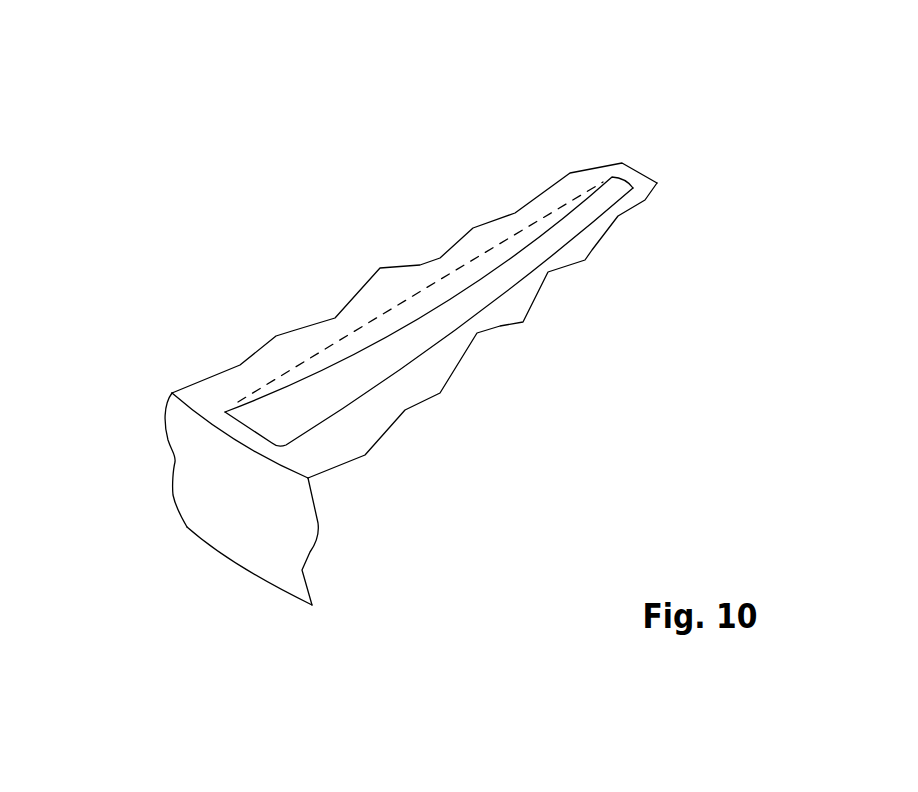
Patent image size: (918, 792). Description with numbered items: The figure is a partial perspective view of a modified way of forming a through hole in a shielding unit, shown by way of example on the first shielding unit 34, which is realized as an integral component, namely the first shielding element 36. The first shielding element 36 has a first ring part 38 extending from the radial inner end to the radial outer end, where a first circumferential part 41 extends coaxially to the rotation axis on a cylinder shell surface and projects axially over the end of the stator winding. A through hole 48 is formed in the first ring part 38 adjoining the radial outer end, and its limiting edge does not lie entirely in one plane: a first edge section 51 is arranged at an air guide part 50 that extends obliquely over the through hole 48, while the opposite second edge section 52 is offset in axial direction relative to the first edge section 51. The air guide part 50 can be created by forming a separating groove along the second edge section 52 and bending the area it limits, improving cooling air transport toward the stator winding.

The first shielding unit 34 is at (416, 259).
The first shielding element 36 is at (582, 137).
The first ring part 38 is at (532, 312).
The first circumferential part 41 is at (213, 527).
The through hole 48 is at (320, 407).
The air guide part 50 is at (430, 288).
The first edge section 51 is at (420, 320).
The second edge section 52 is at (418, 350).